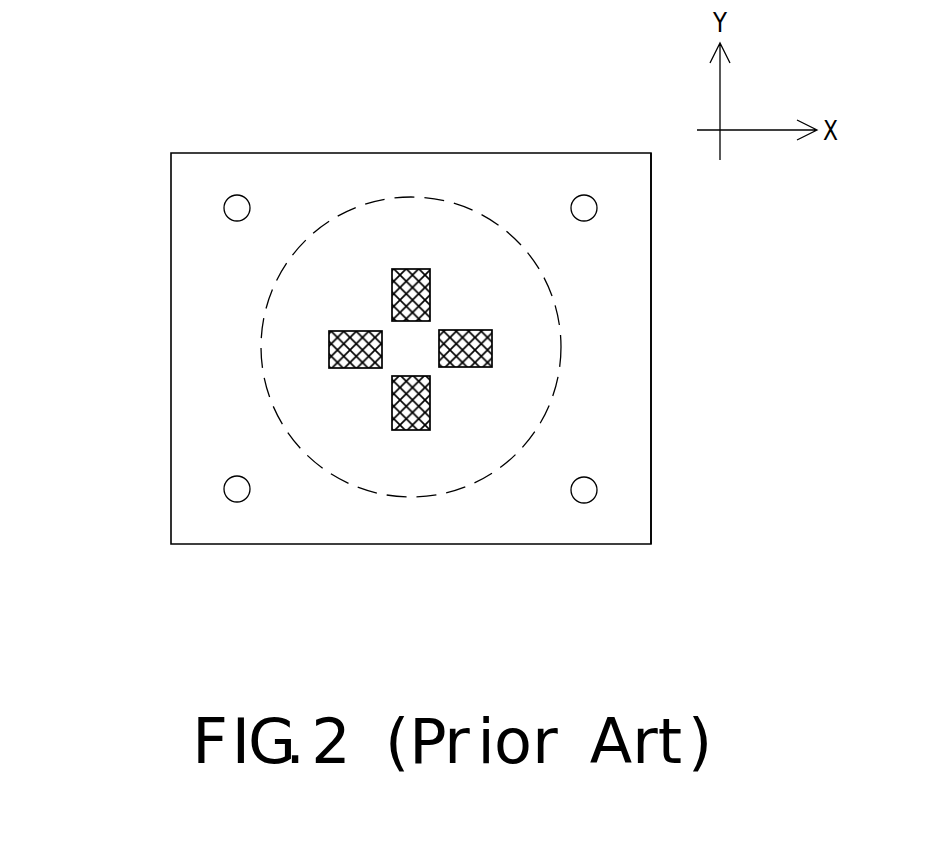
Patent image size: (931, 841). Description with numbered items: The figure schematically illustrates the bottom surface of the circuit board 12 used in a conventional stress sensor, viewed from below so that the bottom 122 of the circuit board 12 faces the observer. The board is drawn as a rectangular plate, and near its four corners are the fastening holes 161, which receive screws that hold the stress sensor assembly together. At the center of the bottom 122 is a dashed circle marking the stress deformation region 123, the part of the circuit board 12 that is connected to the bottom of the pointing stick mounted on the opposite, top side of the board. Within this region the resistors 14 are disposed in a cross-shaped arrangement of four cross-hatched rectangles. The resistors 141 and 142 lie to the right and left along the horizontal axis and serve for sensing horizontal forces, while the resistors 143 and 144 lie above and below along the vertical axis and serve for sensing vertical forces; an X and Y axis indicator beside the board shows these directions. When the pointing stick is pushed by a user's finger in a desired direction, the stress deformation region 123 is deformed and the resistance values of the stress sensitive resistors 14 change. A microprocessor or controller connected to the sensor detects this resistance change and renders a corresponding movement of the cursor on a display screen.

The circuit board 12 is at (547, 167).
The bottom of the circuit board 122 is at (637, 513).
The stress deformation region 123 is at (473, 485).
The resistors 14 is at (408, 352).
The resistor for sensing horizontal forces 141 is at (491, 343).
The resistor for sensing horizontal forces 142 is at (329, 343).
The resistor for sensing vertical forces 143 is at (406, 270).
The resistor for sensing vertical forces 144 is at (402, 428).
The fastening holes 161 is at (238, 202).